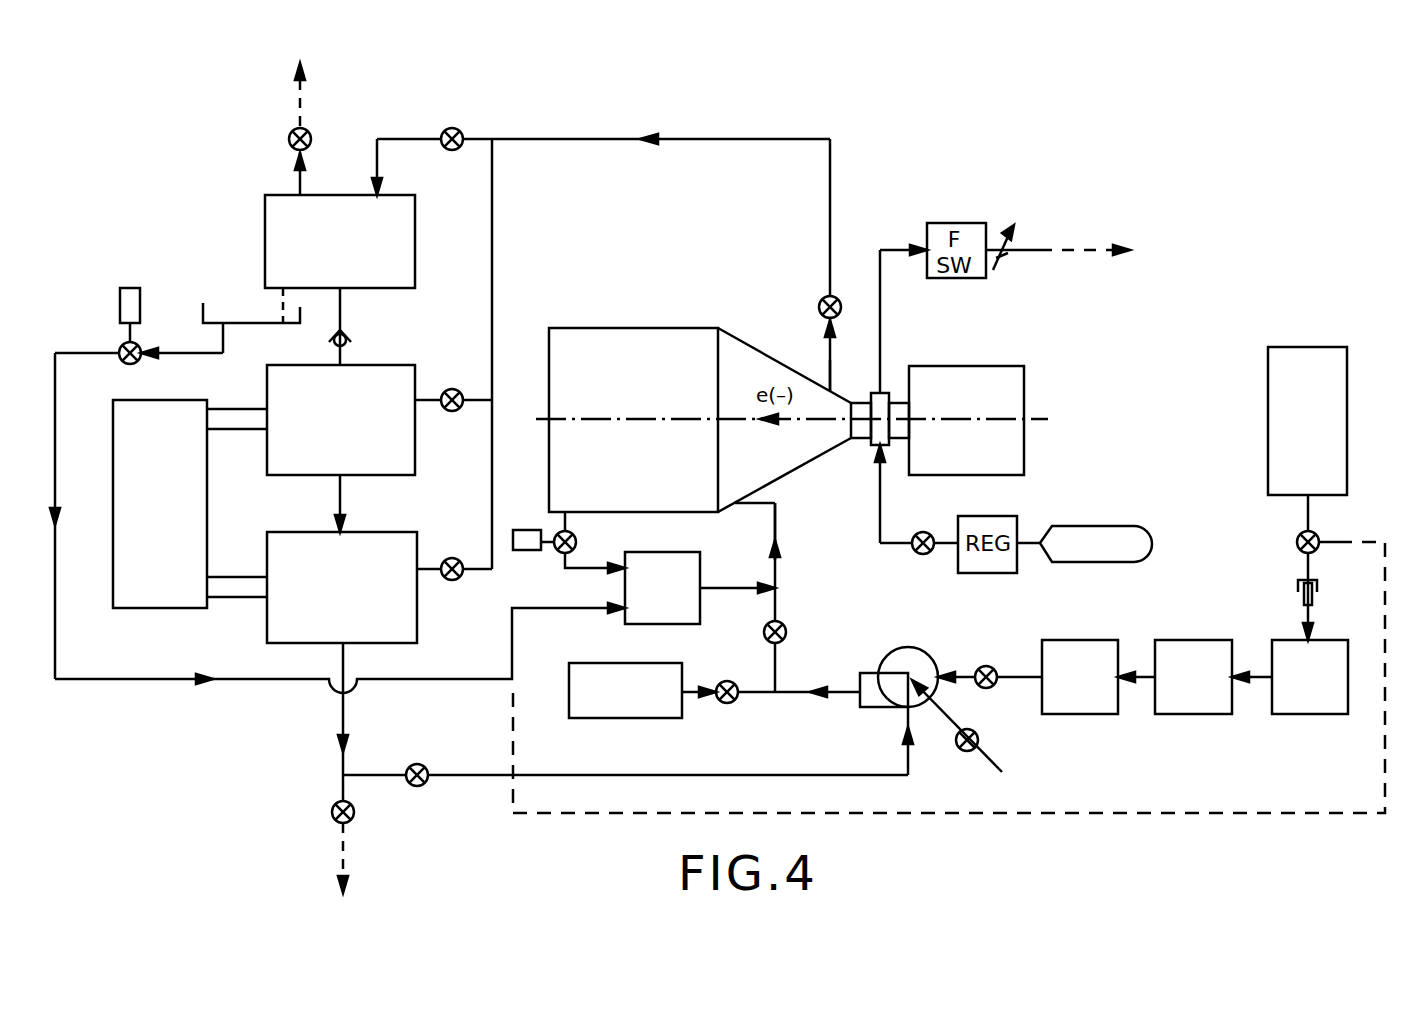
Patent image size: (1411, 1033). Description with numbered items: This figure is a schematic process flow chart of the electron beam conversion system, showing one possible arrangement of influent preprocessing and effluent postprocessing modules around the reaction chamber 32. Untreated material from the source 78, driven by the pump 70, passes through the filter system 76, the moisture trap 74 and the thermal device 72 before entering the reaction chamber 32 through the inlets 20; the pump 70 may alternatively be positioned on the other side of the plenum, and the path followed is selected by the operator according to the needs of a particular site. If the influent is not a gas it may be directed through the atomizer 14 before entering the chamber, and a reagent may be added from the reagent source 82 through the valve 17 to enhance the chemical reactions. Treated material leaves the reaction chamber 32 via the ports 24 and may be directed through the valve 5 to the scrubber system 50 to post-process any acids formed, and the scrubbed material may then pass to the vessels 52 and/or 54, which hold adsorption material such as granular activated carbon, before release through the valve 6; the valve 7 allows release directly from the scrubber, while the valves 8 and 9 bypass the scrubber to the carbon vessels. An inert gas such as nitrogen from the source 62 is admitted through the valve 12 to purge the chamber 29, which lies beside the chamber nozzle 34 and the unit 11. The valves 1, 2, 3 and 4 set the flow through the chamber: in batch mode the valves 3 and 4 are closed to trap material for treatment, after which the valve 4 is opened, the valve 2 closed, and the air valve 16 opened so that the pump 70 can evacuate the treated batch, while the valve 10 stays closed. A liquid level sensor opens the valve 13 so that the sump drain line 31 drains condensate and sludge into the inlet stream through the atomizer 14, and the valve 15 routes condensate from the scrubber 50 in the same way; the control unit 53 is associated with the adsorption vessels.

The valve 1 is at (1297, 542).
The valve 2 is at (986, 666).
The valve 3 is at (786, 632).
The valve 4 is at (819, 307).
The valve 5 is at (452, 128).
The valve 6 is at (332, 812).
The valve 7 is at (289, 139).
The valve 8 is at (452, 389).
The valve 9 is at (452, 558).
The valve 10 is at (417, 764).
The sample unit 11 is at (948, 405).
The valve 12 is at (923, 532).
The valve 13 is at (533, 555).
The atomizer 14 is at (677, 603).
The valve 15 is at (139, 326).
The air valve 16 is at (959, 722).
The valve 17 is at (727, 681).
The inlets 20 is at (754, 531).
The ports 24 is at (847, 376).
The chamber 29 is at (885, 393).
The sump drain line 31 is at (589, 542).
The reaction chamber 32 is at (600, 400).
The chamber nozzle 34 is at (813, 420).
The scrubber system 50 is at (356, 247).
The vessel 52 is at (356, 429).
The control unit 53 is at (166, 522).
The vessel 54 is at (356, 595).
The inert gas source 62 is at (1084, 558).
The pump 70 is at (893, 673).
The unit 72 is at (1096, 692).
The moisture trap 74 is at (1209, 692).
The filter system 76 is at (1326, 692).
The source 78 is at (1324, 420).
The reagent source 82 is at (636, 705).